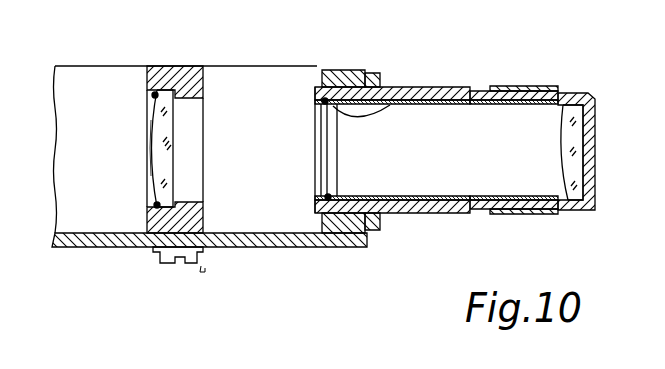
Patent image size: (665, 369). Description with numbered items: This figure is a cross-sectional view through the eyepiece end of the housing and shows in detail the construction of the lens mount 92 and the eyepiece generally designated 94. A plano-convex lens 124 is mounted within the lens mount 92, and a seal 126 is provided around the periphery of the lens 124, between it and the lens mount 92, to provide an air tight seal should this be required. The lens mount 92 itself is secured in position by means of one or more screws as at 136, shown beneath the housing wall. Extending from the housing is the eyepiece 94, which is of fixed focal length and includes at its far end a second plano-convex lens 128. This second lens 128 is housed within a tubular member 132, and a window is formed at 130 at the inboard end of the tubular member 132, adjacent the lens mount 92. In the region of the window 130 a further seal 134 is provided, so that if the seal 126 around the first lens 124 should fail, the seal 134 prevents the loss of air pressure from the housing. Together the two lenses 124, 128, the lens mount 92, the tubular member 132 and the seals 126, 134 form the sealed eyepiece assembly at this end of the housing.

The lens mount 92 is at (184, 78).
The eyepiece 94 is at (590, 93).
The plano-convex lens 124 is at (157, 140).
The seal 126 is at (150, 95).
The second plano-convex lens 128 is at (584, 152).
The window 130 is at (400, 100).
The tubular member 132 is at (450, 213).
The seal 134 is at (322, 100).
The screws 136 is at (192, 263).